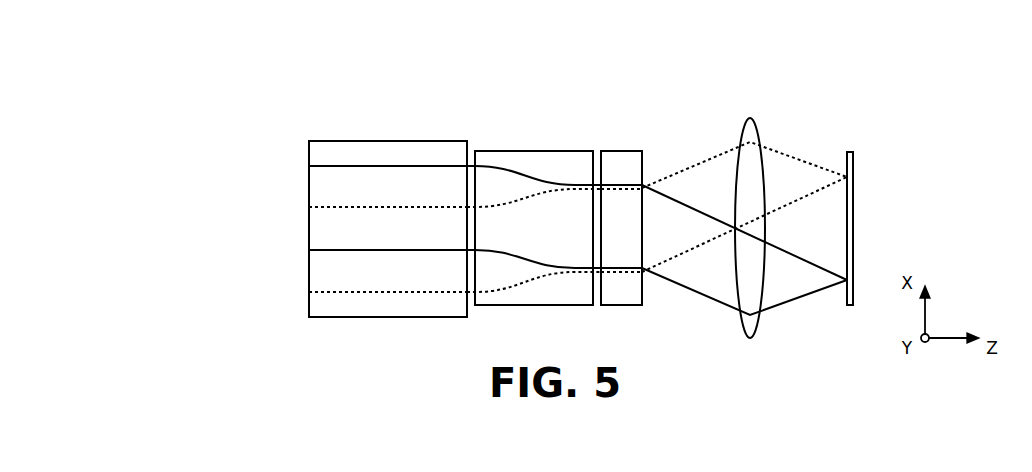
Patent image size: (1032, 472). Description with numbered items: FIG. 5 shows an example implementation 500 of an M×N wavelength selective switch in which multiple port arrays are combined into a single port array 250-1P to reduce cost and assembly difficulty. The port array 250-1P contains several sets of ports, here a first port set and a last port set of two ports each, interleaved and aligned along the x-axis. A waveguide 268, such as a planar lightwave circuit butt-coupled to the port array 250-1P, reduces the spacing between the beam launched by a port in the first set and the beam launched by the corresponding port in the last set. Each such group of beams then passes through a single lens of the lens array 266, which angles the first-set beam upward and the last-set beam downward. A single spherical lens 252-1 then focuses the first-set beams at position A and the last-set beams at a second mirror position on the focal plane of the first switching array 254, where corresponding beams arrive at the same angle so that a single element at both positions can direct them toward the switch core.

The example implementation 500 is at (256, 61).
The port array 250-1P is at (390, 136).
The waveguide 268 is at (537, 145).
The lens array 266 is at (621, 145).
The lens 252-1 is at (753, 117).
The first switching array 254 is at (852, 146).